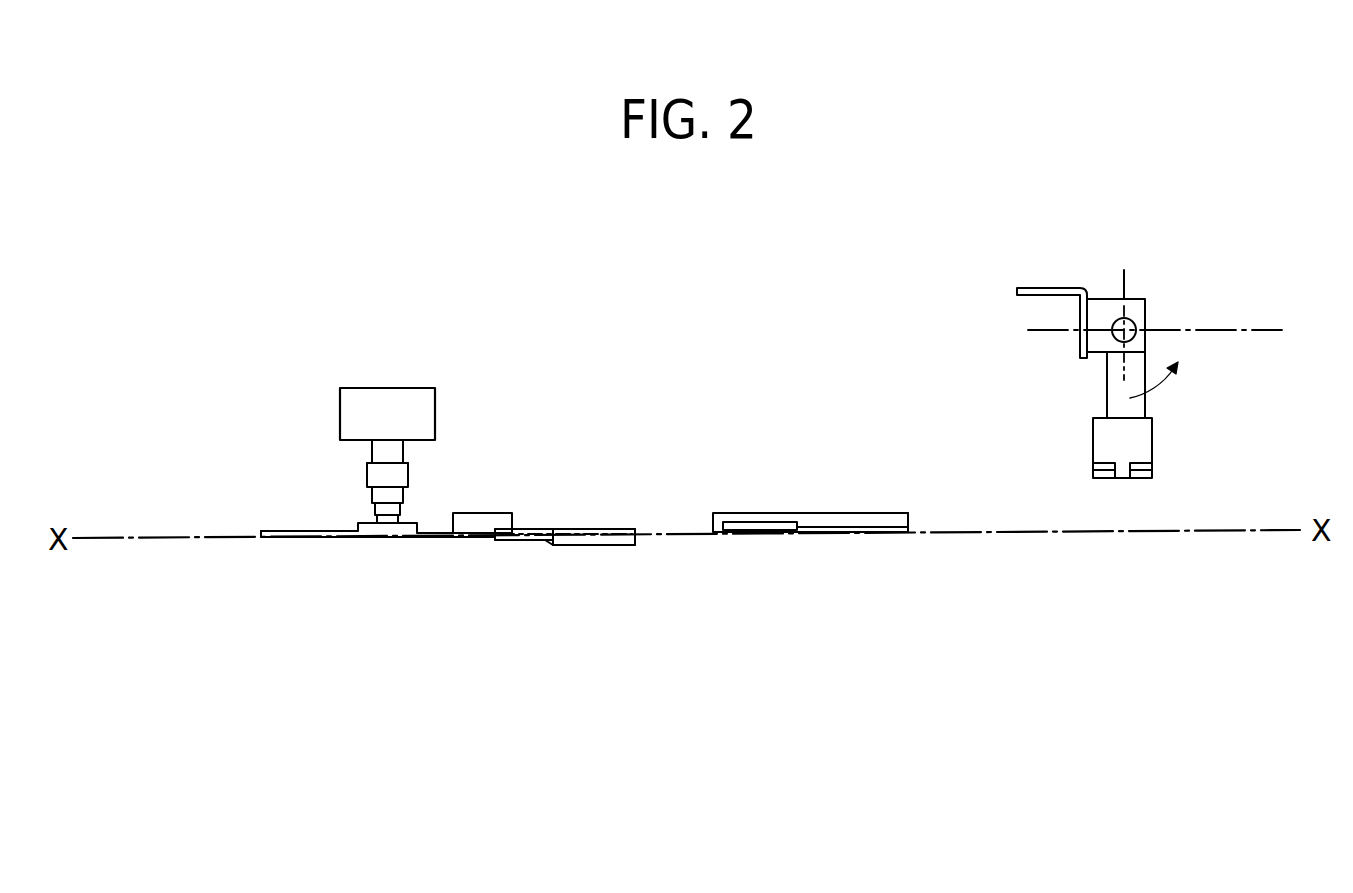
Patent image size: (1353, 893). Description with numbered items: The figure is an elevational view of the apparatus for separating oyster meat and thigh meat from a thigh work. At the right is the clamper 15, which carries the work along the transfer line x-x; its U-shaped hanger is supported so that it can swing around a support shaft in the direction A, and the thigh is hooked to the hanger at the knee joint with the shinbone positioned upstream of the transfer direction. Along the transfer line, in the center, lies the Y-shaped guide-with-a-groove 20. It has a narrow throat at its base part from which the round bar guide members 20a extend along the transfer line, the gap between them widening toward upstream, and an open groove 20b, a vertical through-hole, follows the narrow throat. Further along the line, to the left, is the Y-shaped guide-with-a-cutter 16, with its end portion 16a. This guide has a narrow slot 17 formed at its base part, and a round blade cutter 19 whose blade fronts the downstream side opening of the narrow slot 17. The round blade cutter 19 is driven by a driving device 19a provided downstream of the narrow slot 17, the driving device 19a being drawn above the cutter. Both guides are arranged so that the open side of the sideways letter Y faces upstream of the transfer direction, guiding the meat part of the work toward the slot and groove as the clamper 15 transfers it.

The clamper 15 is at (1140, 288).
The Y-shaped guide-with-a-cutter 16 is at (578, 470).
The end portion of substrate 16a is at (602, 528).
The narrow slot 17 is at (540, 528).
The round blade cutter 19 is at (338, 527).
The driving device 19a is at (396, 400).
The Y-shaped guide-with-a-groove 20 is at (823, 470).
The round bar guide member 20a is at (862, 513).
The open groove 20b is at (755, 513).